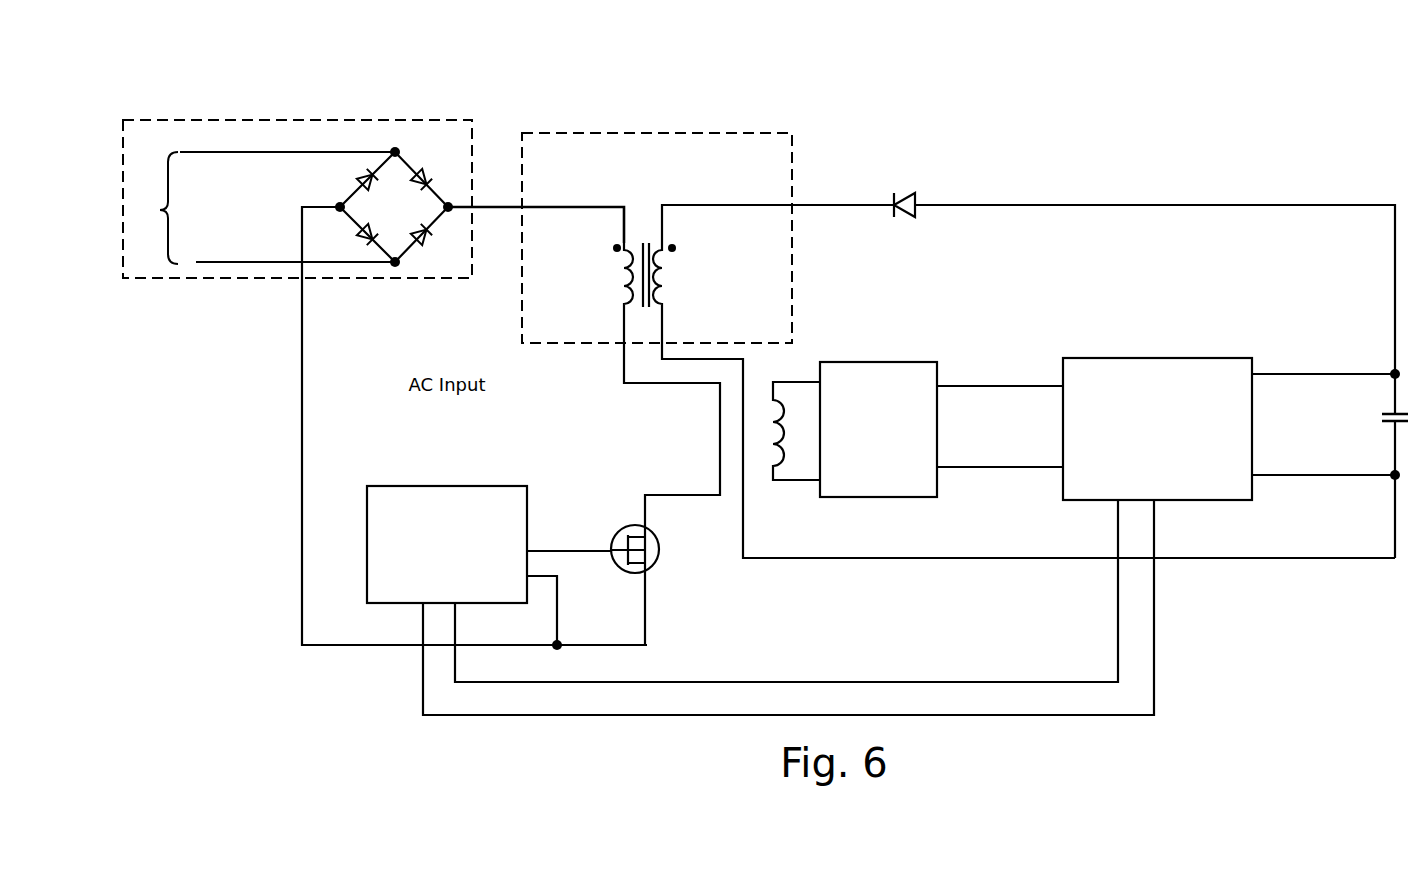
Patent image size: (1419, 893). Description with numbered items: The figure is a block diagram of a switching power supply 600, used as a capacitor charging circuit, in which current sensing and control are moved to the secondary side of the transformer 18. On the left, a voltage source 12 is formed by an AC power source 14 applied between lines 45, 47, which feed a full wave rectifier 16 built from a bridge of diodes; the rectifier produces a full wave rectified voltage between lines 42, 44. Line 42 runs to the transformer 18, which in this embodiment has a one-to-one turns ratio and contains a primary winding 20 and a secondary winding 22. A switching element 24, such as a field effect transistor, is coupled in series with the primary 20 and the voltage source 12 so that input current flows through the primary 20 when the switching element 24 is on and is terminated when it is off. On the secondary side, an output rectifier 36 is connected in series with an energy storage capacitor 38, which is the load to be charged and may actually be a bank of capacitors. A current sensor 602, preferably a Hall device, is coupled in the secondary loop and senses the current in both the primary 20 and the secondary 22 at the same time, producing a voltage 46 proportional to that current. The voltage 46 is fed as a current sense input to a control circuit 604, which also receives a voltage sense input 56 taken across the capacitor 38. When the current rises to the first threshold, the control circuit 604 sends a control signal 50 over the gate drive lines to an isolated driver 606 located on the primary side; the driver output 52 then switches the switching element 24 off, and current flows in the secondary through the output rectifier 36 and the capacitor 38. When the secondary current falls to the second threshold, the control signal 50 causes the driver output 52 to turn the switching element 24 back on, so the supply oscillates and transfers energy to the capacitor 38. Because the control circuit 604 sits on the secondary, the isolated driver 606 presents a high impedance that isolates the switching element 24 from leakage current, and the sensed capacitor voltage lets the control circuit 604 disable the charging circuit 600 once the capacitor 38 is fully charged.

The voltage source 12 is at (396, 118).
The AC power source 14 is at (155, 208).
The full wave rectifier 16 is at (430, 186).
The transformer 18 is at (698, 131).
The primary winding 20 is at (620, 273).
The secondary winding 22 is at (670, 270).
The switching element 24 is at (659, 543).
The output rectifier 36 is at (912, 195).
The energy storage capacitor 38 is at (1385, 425).
The line 42 is at (481, 205).
The line 44 is at (302, 318).
The line 45 is at (202, 152).
The voltage 46 is at (972, 386).
The line 47 is at (212, 262).
The control signal 50 is at (1118, 640).
The driver output 52 is at (568, 551).
The voltage sense lines 56 is at (1318, 374).
The switching power supply 600 is at (990, 172).
The current sensor 602 is at (852, 362).
The control circuit 604 is at (1152, 358).
The isolated driver 606 is at (452, 486).